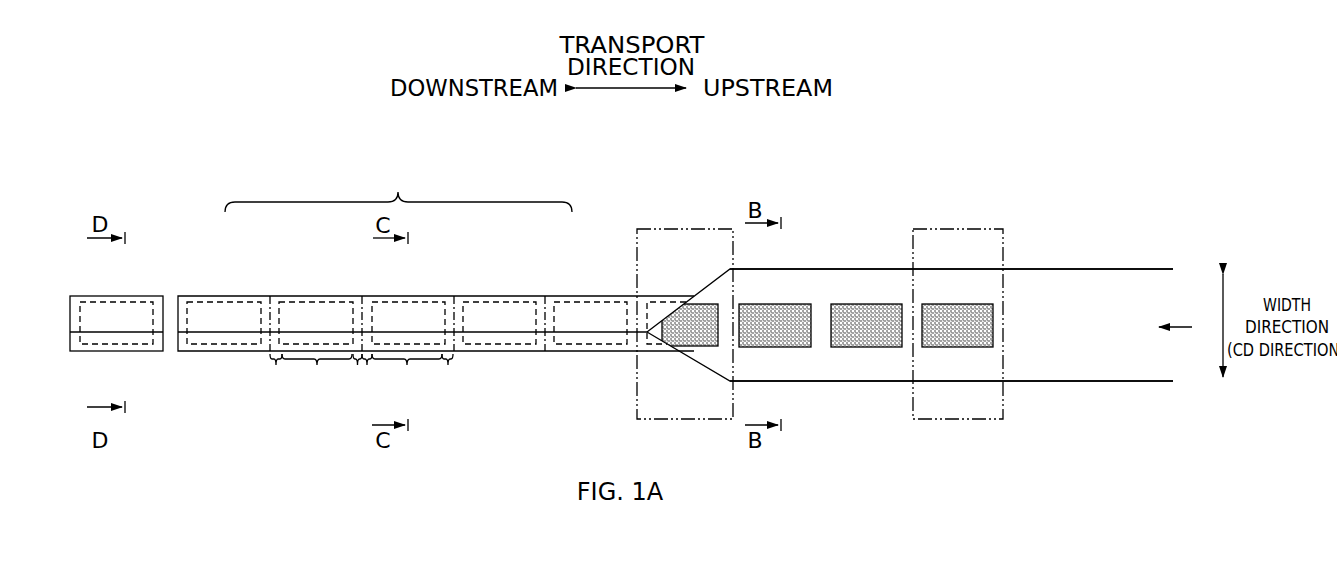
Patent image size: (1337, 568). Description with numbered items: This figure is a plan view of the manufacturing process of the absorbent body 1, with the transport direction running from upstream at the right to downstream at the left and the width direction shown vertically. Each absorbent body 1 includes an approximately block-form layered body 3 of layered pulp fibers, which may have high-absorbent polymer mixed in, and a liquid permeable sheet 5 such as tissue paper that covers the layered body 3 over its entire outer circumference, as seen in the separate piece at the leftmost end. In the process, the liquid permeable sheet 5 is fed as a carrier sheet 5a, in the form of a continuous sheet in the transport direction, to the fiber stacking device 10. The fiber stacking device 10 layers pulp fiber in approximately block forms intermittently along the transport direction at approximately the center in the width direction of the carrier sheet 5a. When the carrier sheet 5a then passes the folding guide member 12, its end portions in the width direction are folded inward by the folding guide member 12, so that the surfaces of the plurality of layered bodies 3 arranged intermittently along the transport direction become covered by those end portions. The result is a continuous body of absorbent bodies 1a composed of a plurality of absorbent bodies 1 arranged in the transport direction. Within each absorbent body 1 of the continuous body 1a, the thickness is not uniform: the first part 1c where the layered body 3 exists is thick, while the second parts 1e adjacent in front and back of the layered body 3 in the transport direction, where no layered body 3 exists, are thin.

The absorbent body 1 is at (127, 293).
The continuous body of absorbent bodies 1a is at (398, 186).
The first part 1c is at (362, 374).
The second parts 1e is at (382, 396).
The layered body 3 is at (100, 300).
The liquid permeable sheet 5 is at (77, 295).
The carrier sheet 5a is at (1090, 268).
The fiber stacking device 10 is at (961, 221).
The folding guide member 12 is at (687, 221).